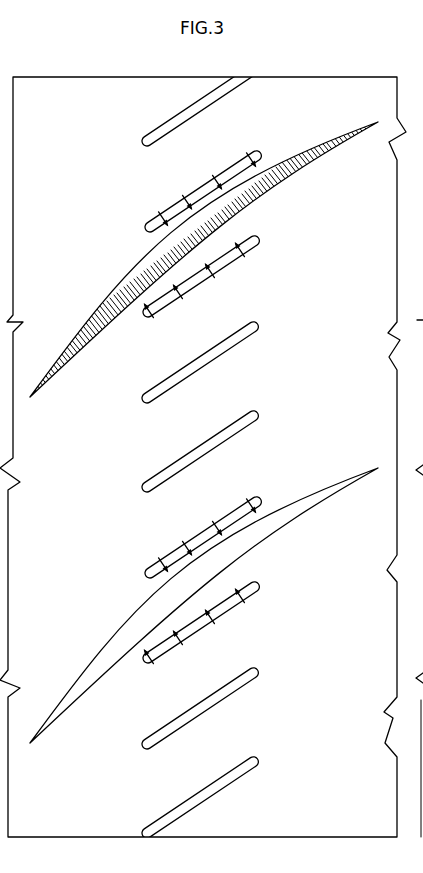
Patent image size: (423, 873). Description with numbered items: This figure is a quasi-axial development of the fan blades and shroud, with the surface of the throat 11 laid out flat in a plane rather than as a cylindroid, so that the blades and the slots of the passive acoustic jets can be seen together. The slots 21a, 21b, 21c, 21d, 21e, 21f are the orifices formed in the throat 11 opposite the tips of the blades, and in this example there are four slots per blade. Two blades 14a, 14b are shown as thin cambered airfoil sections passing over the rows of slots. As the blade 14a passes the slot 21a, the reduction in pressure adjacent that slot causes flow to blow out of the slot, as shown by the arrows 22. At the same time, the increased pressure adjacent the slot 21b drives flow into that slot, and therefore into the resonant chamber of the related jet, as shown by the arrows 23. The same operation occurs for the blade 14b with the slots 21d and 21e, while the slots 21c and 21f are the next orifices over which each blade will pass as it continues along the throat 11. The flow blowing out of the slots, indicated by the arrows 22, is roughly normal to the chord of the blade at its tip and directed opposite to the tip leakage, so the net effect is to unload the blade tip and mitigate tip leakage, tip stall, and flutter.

The throat 11 is at (364, 362).
The blade 14a is at (72, 342).
The blade 14b is at (72, 688).
The slot 21a is at (166, 216).
The slot 21b is at (164, 309).
The slot 21c is at (150, 402).
The slot 21d is at (165, 564).
The slot 21e is at (164, 655).
The slot 21f is at (152, 750).
The arrows 22 is at (258, 167).
The arrows 23 is at (243, 234).